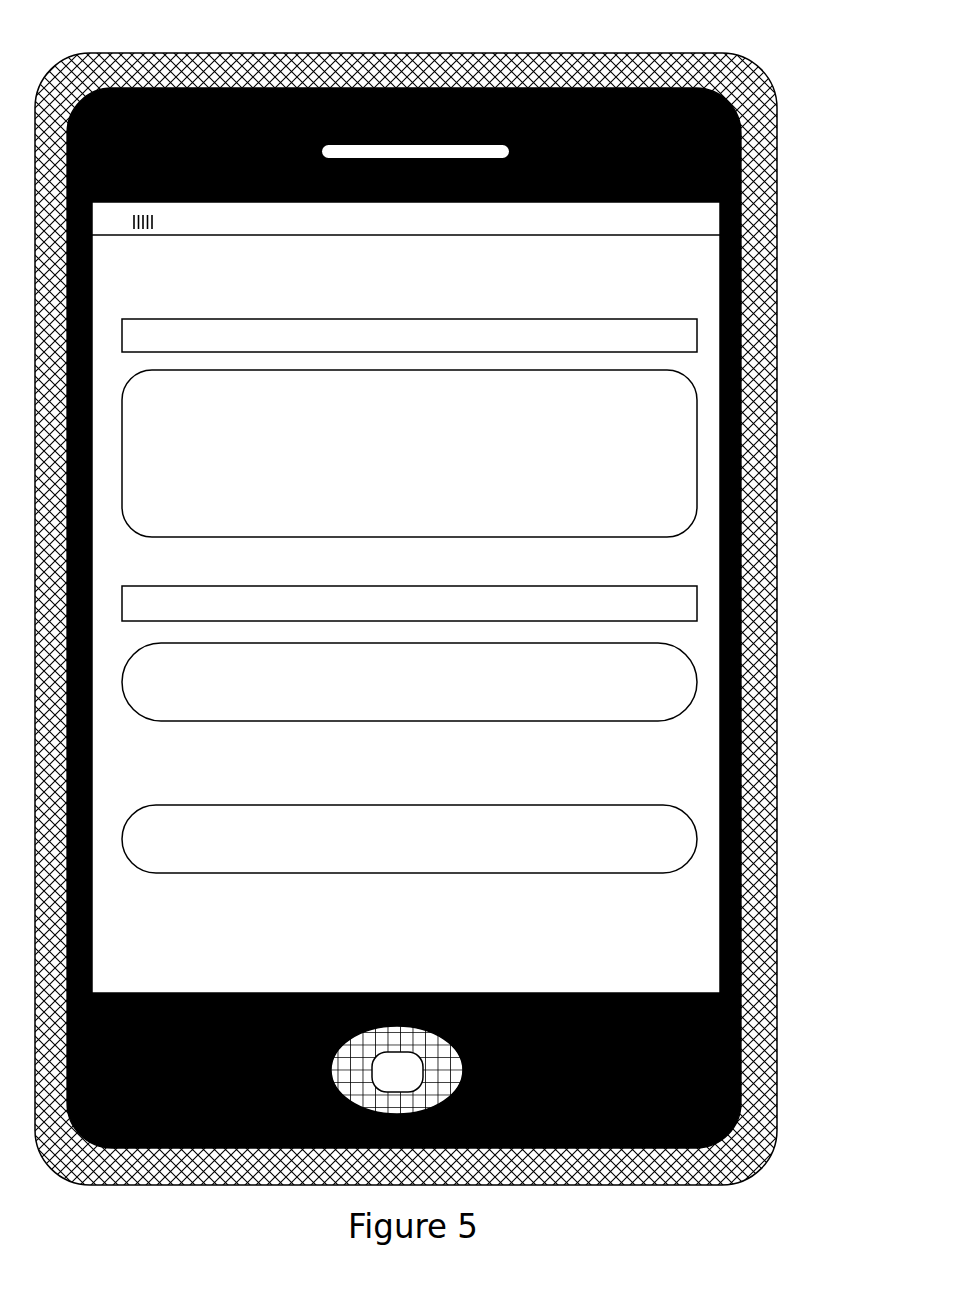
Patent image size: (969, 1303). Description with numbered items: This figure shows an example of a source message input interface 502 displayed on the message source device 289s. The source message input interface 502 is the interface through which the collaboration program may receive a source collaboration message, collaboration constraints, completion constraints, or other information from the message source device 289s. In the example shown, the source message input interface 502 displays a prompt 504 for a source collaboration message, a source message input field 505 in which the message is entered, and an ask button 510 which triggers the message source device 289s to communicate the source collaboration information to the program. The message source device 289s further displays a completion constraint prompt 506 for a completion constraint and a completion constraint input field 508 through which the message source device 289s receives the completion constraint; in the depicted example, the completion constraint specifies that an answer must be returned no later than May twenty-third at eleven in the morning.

The message source device 289s is at (803, 49).
The source message input interface 502 is at (660, 276).
The prompt for a source collaboration message 504 is at (660, 346).
The source message input field 505 is at (660, 513).
The completion constraint prompt 506 is at (660, 616).
The completion constraint input field 508 is at (660, 703).
The ask button 510 is at (660, 853).